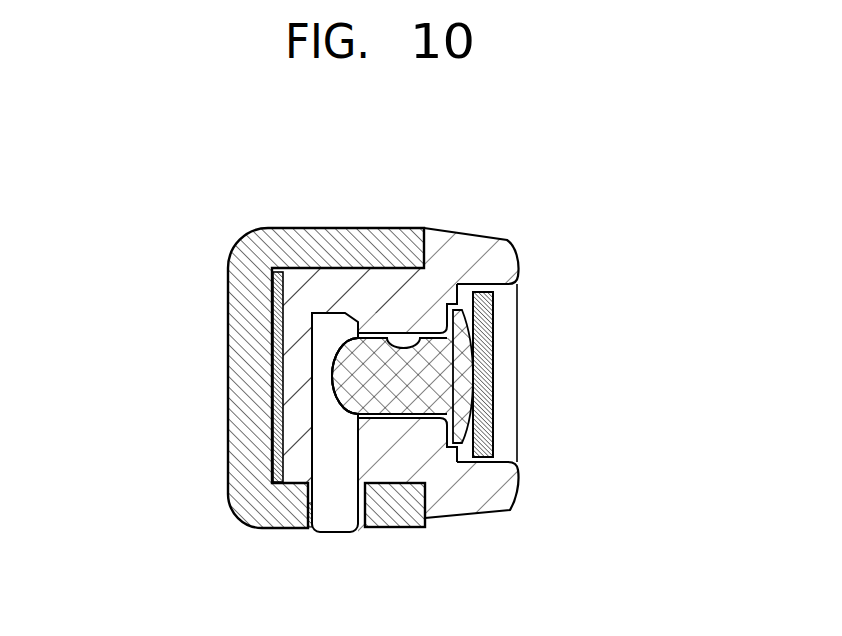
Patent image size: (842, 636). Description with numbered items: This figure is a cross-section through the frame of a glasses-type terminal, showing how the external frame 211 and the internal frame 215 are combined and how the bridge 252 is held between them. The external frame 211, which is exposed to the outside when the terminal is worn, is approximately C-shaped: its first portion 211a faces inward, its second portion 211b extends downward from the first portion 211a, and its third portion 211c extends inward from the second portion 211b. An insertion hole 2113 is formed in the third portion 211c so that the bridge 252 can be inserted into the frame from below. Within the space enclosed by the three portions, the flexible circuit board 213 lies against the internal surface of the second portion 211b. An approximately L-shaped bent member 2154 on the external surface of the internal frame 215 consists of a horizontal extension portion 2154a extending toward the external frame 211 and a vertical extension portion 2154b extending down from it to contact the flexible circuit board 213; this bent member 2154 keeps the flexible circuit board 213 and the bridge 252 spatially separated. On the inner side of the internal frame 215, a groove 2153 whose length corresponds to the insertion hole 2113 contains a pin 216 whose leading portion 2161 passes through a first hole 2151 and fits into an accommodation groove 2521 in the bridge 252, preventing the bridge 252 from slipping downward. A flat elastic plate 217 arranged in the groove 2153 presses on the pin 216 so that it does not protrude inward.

The external frame 211 is at (260, 248).
The first portion 211a is at (380, 242).
The second portion 211b is at (233, 292).
The third portion 211c is at (272, 507).
The insertion hole 2113 is at (310, 529).
The flexible circuit board 213 is at (278, 275).
The internal frame 215 is at (453, 250).
The first hole 2151 is at (428, 337).
The groove 2153 is at (507, 380).
The bent member 2154 is at (130, 331).
The horizontal extension portion 2154a is at (375, 282).
The vertical extension portion 2154b is at (293, 413).
The pin 216 is at (412, 398).
The leading portion 2161 is at (342, 370).
The plate 217 is at (488, 350).
The bridge 252 is at (343, 517).
The accommodation groove 2521 is at (340, 408).